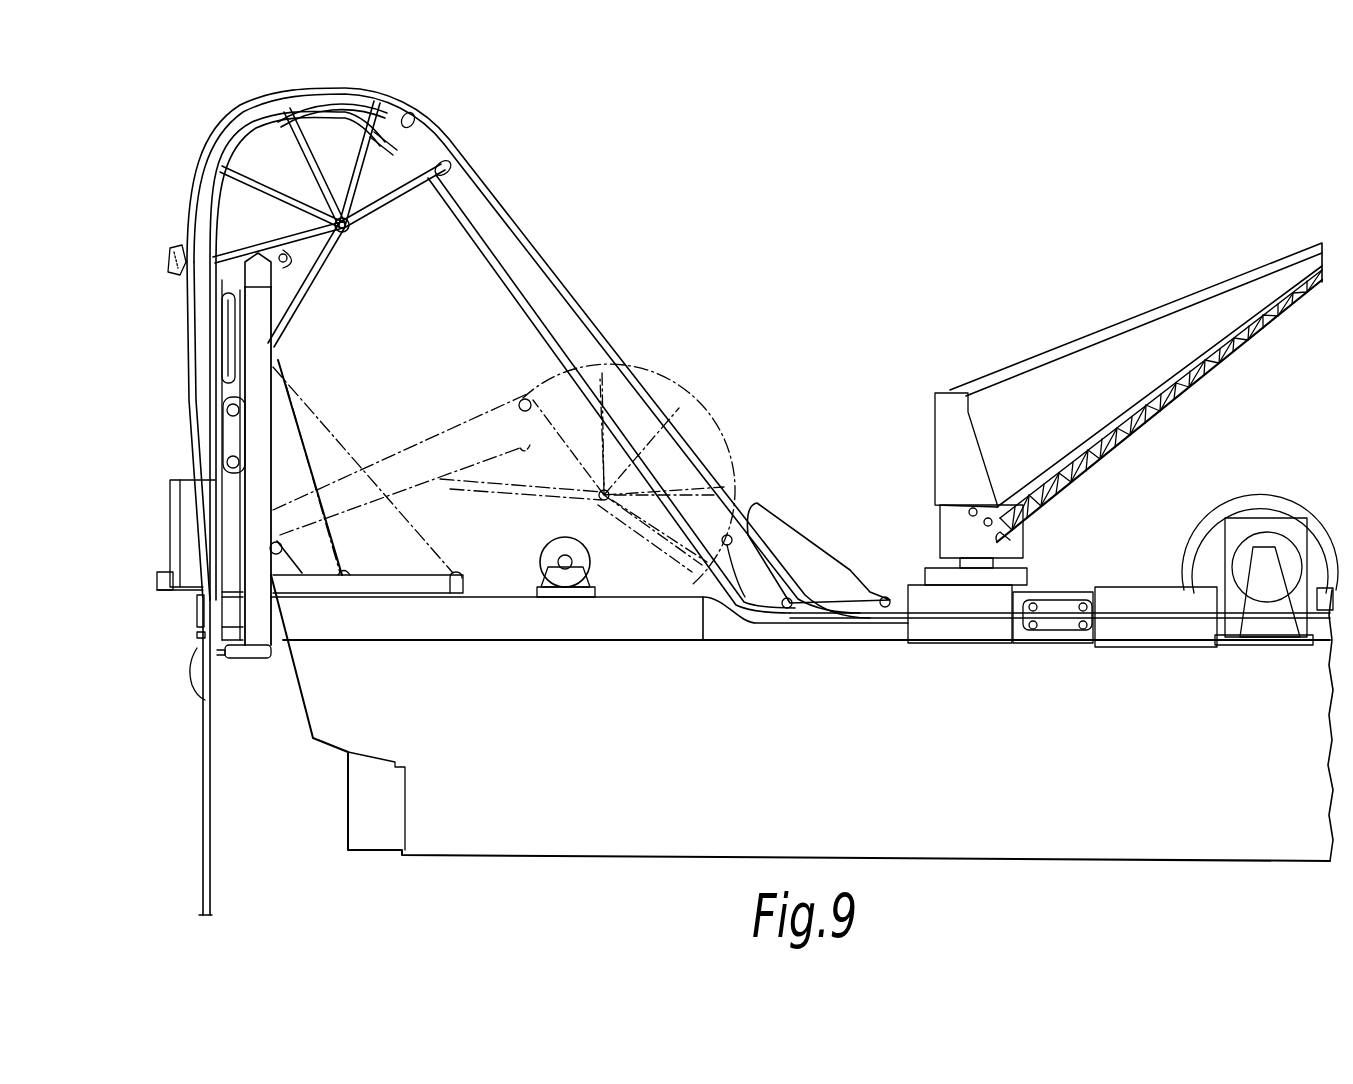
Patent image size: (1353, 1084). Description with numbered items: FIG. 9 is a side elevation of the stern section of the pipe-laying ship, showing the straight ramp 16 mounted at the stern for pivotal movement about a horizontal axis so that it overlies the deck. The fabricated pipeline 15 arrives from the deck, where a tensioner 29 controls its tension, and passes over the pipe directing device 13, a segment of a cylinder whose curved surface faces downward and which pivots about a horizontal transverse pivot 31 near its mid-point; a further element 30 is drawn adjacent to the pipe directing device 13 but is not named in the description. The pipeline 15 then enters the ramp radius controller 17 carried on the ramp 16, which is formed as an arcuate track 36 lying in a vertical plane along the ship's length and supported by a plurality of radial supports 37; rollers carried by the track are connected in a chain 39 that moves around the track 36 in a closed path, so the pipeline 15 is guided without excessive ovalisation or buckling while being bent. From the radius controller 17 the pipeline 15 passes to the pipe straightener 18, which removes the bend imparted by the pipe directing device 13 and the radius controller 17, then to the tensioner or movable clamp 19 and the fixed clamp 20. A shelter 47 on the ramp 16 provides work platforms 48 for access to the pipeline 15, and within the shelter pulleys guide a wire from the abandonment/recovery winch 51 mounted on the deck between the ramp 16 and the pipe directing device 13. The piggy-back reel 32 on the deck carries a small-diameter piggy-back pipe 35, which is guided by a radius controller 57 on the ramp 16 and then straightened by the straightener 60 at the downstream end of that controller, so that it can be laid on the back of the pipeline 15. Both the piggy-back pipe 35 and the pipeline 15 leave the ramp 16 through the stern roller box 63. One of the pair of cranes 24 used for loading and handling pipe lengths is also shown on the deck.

The pipe directing device 13 is at (780, 540).
The pipeline 15 is at (605, 339).
The ramp 16 is at (450, 445).
The ramp radius controller 17 is at (283, 95).
The pipe straightener 18 is at (200, 311).
The tensioner or movable clamp 19 is at (180, 426).
The fixed clamp 20 is at (185, 605).
The crane 24 is at (1100, 479).
The tensioner 29 is at (1065, 595).
The guide roller 30 is at (745, 510).
The horizontal transverse pivot 31 is at (885, 595).
The piggy-back reel 32 is at (1238, 505).
The piggy-back pipe 35 is at (540, 323).
The arcuate track 36 is at (410, 118).
The radial supports 37 is at (372, 210).
The chain 39 is at (283, 261).
The shelter 47 is at (175, 496).
The work platforms 48 is at (185, 578).
The abandonment/recovery winch 51 is at (560, 549).
The radius controller 57 is at (192, 164).
The straightener 60 is at (160, 252).
The stern roller box 63 is at (210, 706).